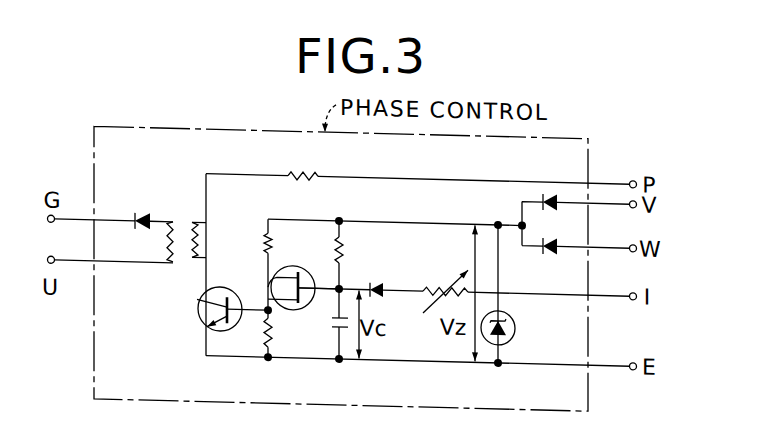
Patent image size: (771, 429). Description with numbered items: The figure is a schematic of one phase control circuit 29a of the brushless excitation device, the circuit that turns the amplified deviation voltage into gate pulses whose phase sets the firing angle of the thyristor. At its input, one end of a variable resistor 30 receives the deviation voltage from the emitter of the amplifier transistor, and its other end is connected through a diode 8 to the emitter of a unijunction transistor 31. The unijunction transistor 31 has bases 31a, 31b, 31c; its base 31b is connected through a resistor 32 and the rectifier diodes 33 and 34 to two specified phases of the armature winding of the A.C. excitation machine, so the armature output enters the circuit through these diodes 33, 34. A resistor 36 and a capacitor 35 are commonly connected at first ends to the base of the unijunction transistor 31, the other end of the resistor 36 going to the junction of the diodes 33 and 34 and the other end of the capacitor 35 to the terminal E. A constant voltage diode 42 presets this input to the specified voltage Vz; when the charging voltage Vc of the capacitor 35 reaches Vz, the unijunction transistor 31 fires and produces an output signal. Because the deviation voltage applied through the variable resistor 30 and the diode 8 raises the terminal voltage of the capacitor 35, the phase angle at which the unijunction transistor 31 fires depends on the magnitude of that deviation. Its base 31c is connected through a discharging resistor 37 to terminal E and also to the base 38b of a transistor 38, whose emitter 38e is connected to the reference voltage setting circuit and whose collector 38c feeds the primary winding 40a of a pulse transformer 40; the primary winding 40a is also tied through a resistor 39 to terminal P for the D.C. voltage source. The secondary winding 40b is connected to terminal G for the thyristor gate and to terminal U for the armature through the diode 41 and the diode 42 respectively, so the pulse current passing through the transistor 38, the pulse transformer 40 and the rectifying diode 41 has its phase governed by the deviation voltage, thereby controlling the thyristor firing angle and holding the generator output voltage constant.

The phase control circuit 29a is at (590, 160).
The resistor 39 is at (306, 173).
The diode 41 is at (141, 220).
The pulse transformer 40 is at (155, 256).
The primary winding 40a is at (187, 251).
The secondary winding 40b is at (172, 237).
The resistor 32 is at (266, 233).
The transistor 38 is at (188, 310).
The base 38b is at (229, 301).
The collector 38c is at (198, 304).
The emitter 38e is at (214, 334).
The discharging resistor 37 is at (263, 352).
The unijunction transistor 31 is at (279, 292).
The base 31a is at (299, 267).
The base 31b is at (272, 290).
The base 31c is at (288, 305).
The resistor 36 is at (345, 258).
The capacitor 35 is at (335, 333).
The diode 8 is at (381, 283).
The variable resistor 30 is at (443, 286).
The constant voltage diode 42 is at (515, 324).
The diode 33 is at (547, 205).
The diode 34 is at (547, 249).